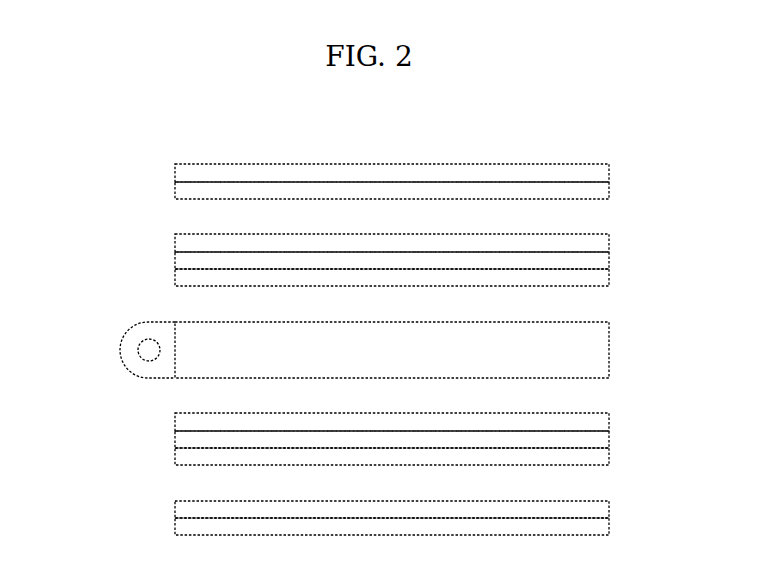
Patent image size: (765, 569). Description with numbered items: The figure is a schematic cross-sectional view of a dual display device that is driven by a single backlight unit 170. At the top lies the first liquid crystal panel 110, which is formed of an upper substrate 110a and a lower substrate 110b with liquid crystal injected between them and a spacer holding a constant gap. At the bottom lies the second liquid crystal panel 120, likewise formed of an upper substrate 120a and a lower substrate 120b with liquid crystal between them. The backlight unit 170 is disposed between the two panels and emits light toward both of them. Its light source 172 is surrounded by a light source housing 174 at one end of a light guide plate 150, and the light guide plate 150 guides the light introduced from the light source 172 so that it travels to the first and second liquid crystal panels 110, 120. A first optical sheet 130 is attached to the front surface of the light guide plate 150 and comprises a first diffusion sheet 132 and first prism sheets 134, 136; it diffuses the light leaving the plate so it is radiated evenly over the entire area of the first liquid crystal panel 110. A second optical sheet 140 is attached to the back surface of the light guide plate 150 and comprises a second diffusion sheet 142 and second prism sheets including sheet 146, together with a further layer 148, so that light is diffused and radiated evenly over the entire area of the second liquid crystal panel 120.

The first liquid crystal panel 110 is at (428, 181).
The upper substrate 110a is at (611, 171).
The lower substrate 110b is at (611, 190).
The first optical sheet 130 is at (428, 260).
The first prism sheet 136 is at (611, 242).
The first prism sheet 134 is at (611, 260).
The first diffusion sheet 132 is at (611, 277).
The light guide plate 150 is at (611, 349).
The backlight unit 170 is at (117, 333).
The light source 172 is at (138, 345).
The light source housing 174 is at (151, 338).
The second optical sheet 140 is at (428, 439).
The second diffusion sheet 142 is at (611, 420).
The second prism sheet 146 is at (611, 438).
The third rear layer 148 is at (611, 456).
The second liquid crystal panel 120 is at (428, 518).
The lower substrate 120b is at (611, 508).
The upper substrate 120a is at (611, 526).